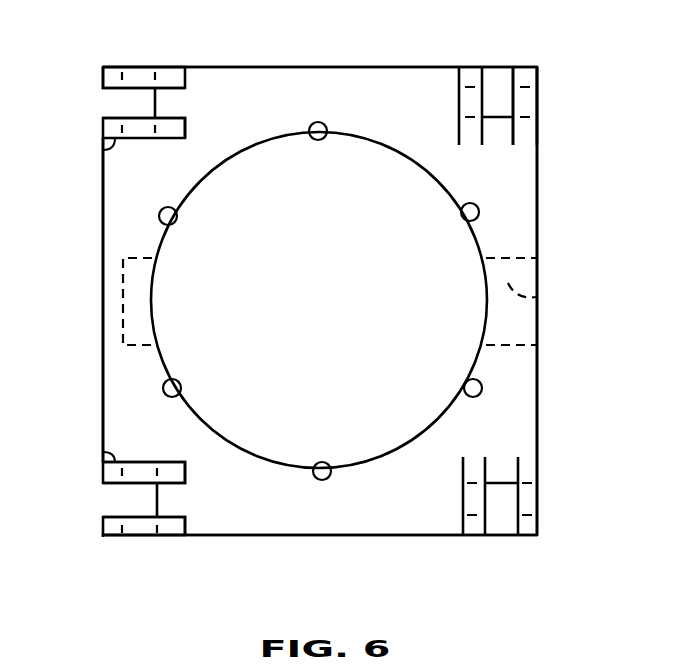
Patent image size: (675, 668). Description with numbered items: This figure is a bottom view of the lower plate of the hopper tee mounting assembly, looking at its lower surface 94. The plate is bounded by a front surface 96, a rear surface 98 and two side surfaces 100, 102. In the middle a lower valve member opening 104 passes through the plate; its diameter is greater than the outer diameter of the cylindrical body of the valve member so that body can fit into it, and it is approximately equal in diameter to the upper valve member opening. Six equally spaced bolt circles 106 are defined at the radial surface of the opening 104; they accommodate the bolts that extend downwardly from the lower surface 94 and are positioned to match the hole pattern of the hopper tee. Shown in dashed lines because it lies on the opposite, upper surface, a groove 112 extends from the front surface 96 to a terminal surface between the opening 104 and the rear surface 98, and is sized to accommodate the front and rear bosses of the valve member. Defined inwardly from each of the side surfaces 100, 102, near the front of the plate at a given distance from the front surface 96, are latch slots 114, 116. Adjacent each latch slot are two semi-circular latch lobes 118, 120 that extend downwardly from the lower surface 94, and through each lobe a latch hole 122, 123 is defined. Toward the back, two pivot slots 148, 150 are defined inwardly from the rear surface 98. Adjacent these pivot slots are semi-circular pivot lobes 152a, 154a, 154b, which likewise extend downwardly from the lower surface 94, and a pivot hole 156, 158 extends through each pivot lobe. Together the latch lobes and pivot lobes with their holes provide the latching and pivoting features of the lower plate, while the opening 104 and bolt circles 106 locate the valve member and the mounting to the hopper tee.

The lower surface 94 is at (515, 190).
The front surface 96 is at (540, 408).
The rear surface 98 is at (103, 390).
The side surface 100 is at (366, 66).
The side surface 102 is at (353, 537).
The lower valve member opening 104 is at (319, 300).
The bolt circles 106 is at (320, 140).
The groove 112 is at (135, 298).
The latch slot 114 is at (497, 85).
The latch slot 116 is at (502, 518).
The latch lobe 118 is at (538, 77).
The latch lobe 120 is at (462, 80).
The latch hole 122 is at (538, 98).
The latch hole 123 is at (462, 110).
The pivot slot 148 is at (122, 100).
The pivot slot 150 is at (125, 496).
The pivot lobe 152a is at (105, 72).
The pivot lobe 154a is at (108, 150).
The pivot lobe 154b is at (110, 460).
The pivot hole 156 is at (138, 74).
The pivot hole 158 is at (137, 135).